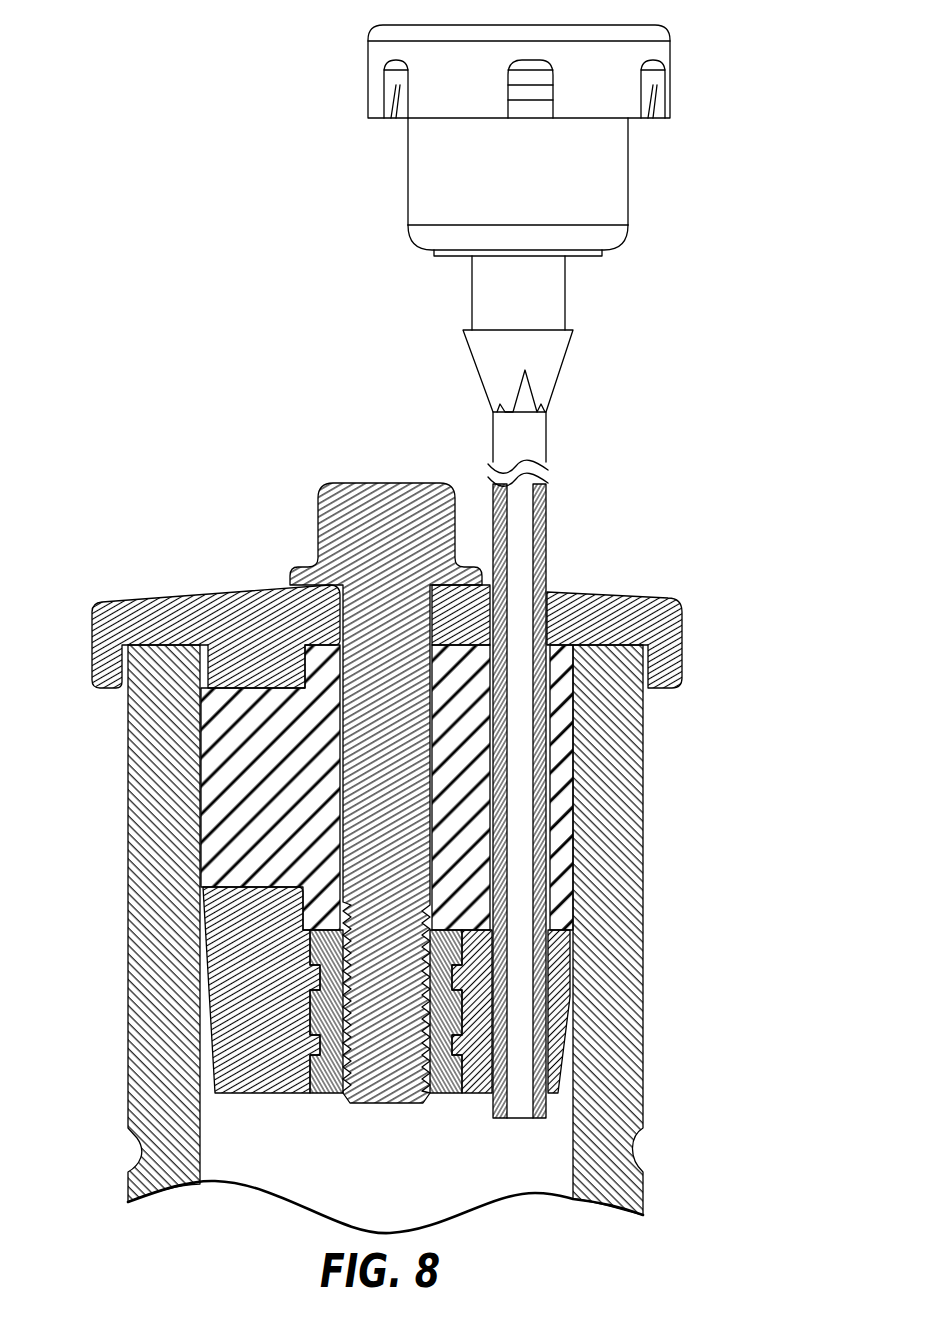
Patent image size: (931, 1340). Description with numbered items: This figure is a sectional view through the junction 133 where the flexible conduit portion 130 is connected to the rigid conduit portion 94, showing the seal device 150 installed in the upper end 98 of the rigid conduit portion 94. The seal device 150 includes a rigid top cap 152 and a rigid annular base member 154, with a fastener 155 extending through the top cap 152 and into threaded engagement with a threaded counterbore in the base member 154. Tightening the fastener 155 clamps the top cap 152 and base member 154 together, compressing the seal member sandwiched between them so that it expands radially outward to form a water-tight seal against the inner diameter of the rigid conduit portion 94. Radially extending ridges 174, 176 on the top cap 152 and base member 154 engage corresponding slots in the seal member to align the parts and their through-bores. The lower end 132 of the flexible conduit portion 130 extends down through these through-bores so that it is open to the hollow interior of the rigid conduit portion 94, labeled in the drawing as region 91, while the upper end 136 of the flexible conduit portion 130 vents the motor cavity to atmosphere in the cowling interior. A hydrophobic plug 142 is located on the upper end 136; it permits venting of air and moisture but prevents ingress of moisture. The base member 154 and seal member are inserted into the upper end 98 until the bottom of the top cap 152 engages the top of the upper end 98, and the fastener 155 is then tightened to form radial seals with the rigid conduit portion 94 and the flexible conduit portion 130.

The hydrophobic plug 142 is at (680, 86).
The upper end of the flexible conduit portion 136 is at (548, 438).
The flexible conduit portion 130 is at (558, 559).
The fastener 155 is at (318, 523).
The seal device 150 is at (162, 601).
The top cap 152 is at (684, 632).
The rigid conduit portion 94 is at (622, 920).
The upper end of the rigid conduit portion 98 is at (644, 735).
The radially extending ridge on the top cap 174 is at (252, 672).
The lower end of the flexible conduit portion 132 is at (548, 812).
The radially extending ridge on the base member 176 is at (250, 938).
The junction 133 is at (112, 835).
The base member 154 is at (560, 1013).
The chamber 91 is at (404, 1178).